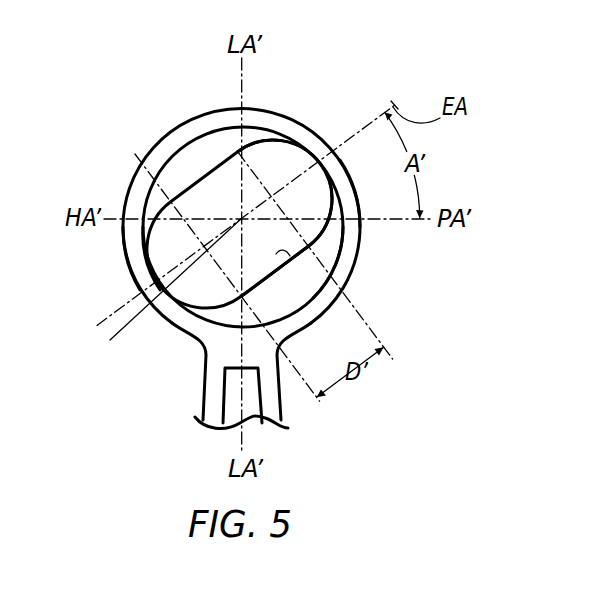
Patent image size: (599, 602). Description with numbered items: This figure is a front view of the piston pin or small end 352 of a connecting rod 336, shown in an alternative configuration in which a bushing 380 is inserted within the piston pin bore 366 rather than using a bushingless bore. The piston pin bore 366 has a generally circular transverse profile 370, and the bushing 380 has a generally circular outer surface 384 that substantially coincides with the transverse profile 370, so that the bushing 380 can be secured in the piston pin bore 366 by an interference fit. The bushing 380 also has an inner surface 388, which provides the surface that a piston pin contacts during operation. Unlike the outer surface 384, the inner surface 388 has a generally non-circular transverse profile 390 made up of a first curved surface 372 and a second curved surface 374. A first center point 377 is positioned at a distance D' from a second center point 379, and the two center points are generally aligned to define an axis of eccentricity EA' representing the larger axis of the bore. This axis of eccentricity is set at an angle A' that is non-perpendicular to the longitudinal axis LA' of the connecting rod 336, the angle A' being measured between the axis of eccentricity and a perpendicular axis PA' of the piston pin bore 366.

The piston pin end 352 is at (344, 78).
The transverse profile 370 is at (188, 142).
The connecting rod 336 is at (444, 181).
The piston pin bore 366 is at (341, 243).
The first curved surface 372 is at (284, 142).
The first center point 377 is at (311, 147).
The inner surface 388 is at (298, 284).
The bushing 380 is at (318, 297).
The outer surface 384 is at (148, 263).
The second center point 379 is at (184, 285).
The second curved surface 374 is at (158, 292).
The non-circular transverse profile 390 is at (237, 320).